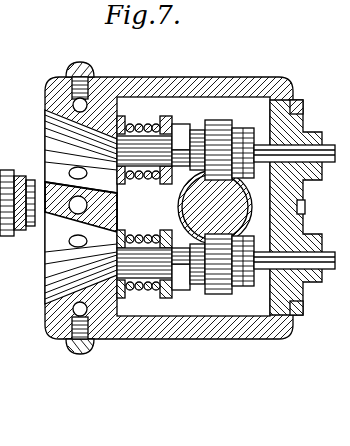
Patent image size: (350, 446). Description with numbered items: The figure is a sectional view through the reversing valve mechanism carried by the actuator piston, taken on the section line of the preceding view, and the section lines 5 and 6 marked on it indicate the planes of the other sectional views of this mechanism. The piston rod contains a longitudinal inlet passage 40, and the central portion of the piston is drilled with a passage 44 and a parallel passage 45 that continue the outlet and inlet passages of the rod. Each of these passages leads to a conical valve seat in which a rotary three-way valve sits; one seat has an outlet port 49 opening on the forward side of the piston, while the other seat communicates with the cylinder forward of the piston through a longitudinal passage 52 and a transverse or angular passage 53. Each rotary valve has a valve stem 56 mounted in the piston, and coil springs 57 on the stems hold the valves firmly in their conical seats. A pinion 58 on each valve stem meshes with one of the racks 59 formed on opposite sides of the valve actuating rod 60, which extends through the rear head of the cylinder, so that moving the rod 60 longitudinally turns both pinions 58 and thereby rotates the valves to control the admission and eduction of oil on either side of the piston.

The section line 5- 5 is at (92, 53).
The section line 6- 6 is at (200, 72).
The inlet passage 40 is at (178, 216).
The passage 44 is at (46, 132).
The parallel passage 45 is at (46, 276).
The outlet port 49 is at (47, 97).
The longitudinal passage 52 is at (46, 234).
The transverse or angular passage 53 is at (46, 182).
The valve stem 56 is at (306, 130).
The coil springs 57 is at (124, 122).
The pinion 58 is at (215, 125).
The racks 59 is at (243, 150).
The valve actuating rod 60 is at (297, 209).